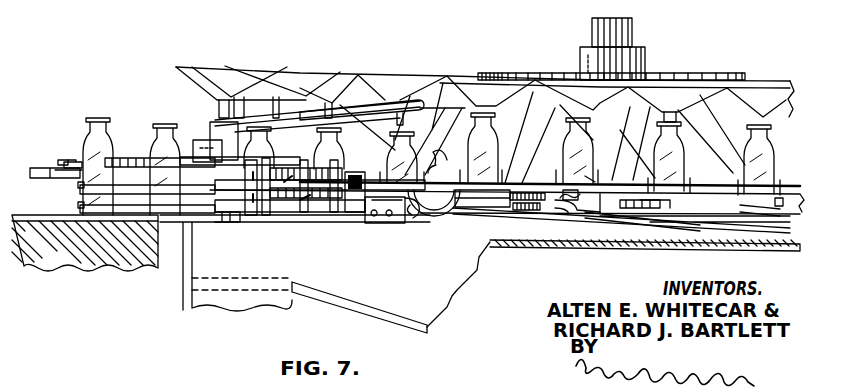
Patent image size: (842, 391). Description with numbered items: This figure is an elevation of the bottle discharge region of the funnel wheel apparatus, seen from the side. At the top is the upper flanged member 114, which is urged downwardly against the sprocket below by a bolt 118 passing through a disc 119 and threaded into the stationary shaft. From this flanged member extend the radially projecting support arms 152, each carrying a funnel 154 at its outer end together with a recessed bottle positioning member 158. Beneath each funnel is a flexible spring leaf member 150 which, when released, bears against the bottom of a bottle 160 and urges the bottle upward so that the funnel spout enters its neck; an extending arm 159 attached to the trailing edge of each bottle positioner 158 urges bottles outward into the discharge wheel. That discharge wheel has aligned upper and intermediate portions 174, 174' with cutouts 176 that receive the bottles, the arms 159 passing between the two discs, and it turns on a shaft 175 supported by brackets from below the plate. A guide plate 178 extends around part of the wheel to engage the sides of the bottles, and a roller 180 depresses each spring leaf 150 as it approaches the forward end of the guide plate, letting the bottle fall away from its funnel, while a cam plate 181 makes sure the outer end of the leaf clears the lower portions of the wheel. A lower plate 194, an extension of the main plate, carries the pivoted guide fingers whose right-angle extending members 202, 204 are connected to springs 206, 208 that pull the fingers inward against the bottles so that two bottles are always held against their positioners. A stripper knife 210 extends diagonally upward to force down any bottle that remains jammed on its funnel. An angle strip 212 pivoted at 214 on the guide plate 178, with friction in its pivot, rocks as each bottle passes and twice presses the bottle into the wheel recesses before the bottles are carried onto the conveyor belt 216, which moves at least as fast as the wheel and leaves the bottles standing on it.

The upper flanged member 114 is at (716, 81).
The bolt 118 is at (628, 30).
The disc 119 is at (648, 60).
The spring leaf member 150 is at (405, 226).
The support arm 152 is at (518, 115).
The funnel 154 is at (370, 75).
The bottle positioning member 158 is at (555, 168).
The extending arm 159 is at (590, 180).
The bottle 160 is at (98, 118).
The upper portion of rotatable wheel 174 is at (160, 140).
The intermediate portion of rotatable wheel 174' is at (122, 197).
The shaft 175 is at (250, 222).
The cutout 176 is at (169, 272).
The guide plate 178 is at (42, 170).
The roller 180 is at (447, 160).
The cam plate 181 is at (412, 214).
The lower plate 194 is at (347, 226).
The right angle extending member 202 is at (606, 228).
The right angle extending member 204 is at (577, 212).
The spring 206 is at (528, 202).
The spring 208 is at (548, 212).
The stripper knife 210 is at (385, 98).
The angle strip 212 is at (58, 160).
The pivot 214 is at (70, 160).
The conveyor belt 216 is at (36, 258).